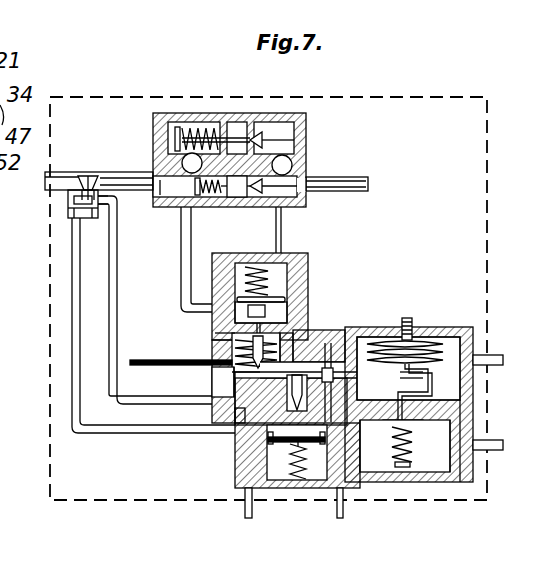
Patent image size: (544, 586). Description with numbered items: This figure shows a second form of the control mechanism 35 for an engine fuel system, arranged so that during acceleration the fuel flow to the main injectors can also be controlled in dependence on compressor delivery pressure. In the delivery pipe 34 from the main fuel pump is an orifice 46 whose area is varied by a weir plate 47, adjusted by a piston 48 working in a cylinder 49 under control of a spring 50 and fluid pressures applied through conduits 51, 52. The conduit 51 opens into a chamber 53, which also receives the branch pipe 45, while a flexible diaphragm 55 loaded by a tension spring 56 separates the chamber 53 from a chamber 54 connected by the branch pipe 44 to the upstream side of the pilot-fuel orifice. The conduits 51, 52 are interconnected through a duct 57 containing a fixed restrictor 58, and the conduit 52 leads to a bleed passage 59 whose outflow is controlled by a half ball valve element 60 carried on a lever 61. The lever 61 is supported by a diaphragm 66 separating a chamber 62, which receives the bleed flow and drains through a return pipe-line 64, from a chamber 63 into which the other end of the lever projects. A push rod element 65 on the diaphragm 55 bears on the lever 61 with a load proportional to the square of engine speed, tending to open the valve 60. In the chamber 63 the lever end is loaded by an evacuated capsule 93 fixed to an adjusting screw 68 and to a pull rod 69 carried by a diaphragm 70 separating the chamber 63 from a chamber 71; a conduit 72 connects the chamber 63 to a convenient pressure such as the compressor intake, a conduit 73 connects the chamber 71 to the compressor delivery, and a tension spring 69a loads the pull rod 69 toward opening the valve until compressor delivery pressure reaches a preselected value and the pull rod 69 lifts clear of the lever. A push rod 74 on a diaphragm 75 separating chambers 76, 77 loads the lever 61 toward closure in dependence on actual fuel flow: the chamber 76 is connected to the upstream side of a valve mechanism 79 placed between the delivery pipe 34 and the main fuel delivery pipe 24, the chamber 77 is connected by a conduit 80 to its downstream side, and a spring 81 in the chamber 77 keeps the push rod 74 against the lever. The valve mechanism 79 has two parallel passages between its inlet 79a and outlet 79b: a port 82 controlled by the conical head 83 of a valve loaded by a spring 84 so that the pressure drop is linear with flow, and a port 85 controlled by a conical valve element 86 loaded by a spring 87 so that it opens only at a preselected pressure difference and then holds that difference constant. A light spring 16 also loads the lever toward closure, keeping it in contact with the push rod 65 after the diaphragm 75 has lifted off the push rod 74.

The control unit enclosure 35 is at (97, 97).
The valve mechanism 79 is at (298, 123).
The spring 87 is at (189, 133).
The port 85 is at (251, 123).
The conical valve element 86 is at (273, 123).
The outlet 79b is at (300, 185).
The spring 84 is at (207, 195).
The port 82 is at (250, 207).
The conical head 83 is at (306, 195).
The conduit 80 is at (287, 200).
The main fuel delivery pipe 24 is at (366, 180).
The delivery pipe 34 is at (45, 180).
The orifice 46 is at (82, 173).
The weir plate 47 is at (92, 183).
The spring 50 is at (70, 203).
The piston 48 is at (68, 212).
The cylinder 49 is at (103, 212).
The inlet 79a is at (166, 200).
The conduit 51 is at (72, 301).
The conduit 52 is at (108, 318).
The spring 81 is at (181, 271).
The chamber 77 is at (300, 260).
The diaphragm 75 is at (300, 285).
The chamber 76 is at (300, 305).
The duct 57 is at (212, 410).
The push rod 74 is at (253, 353).
The passage 16 is at (217, 337).
The half ball valve element 60 is at (250, 365).
The return pipe-line 64 is at (179, 382).
The bleed passage 59 is at (230, 382).
The diaphragm 66 is at (322, 388).
The fixed restrictor 58 is at (285, 427).
The push rod element 65 is at (296, 392).
The chamber 53 is at (265, 460).
The chamber 54 is at (278, 472).
The tension spring 56 is at (303, 475).
The branch pipe 44 is at (250, 512).
The branch pipe 45 is at (340, 518).
The chamber 63 is at (473, 327).
The chamber 62 is at (300, 335).
The adjusting screw 68 is at (412, 326).
The evacuated capsule 93 is at (388, 340).
The pull rod 69 is at (432, 388).
The lever 61 is at (396, 380).
The tension spring 69a is at (417, 453).
The flexible diaphragm 55 is at (359, 487).
The chamber 71 is at (433, 460).
The diaphragm 70 is at (467, 447).
The conduit 72 is at (497, 357).
The conduit 73 is at (497, 443).